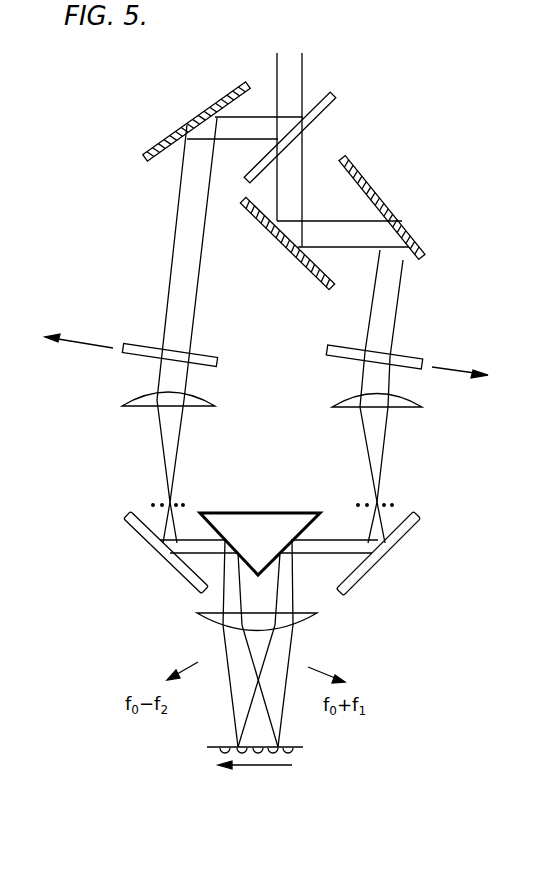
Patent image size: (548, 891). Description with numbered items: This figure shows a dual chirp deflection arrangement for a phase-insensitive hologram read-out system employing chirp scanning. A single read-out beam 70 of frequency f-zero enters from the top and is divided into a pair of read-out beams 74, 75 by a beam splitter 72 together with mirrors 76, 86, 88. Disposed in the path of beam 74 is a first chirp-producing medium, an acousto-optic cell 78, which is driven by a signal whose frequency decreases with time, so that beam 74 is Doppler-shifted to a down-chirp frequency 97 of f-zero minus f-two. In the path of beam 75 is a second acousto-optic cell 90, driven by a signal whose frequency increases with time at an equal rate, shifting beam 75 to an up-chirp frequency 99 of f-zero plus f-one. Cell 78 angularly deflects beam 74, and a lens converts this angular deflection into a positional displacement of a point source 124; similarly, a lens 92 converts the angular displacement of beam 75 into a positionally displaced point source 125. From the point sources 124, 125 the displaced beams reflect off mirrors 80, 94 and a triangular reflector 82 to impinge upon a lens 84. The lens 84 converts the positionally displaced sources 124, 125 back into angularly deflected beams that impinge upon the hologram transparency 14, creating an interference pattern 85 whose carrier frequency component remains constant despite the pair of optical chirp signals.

The read-out beam 70 is at (302, 70).
The beam splitter 72 is at (337, 93).
The read-out beam 74 is at (173, 238).
The read-out beam 75 is at (400, 303).
The mirror 76 is at (192, 118).
The acousto-optic cell 78 is at (203, 347).
The mirror 80 is at (143, 540).
The triangular reflector 82 is at (265, 513).
The lens 84 is at (208, 617).
The interference pattern 85 is at (262, 747).
The mirror 86 is at (290, 260).
The mirror 88 is at (380, 203).
The acousto-optic cell 90 is at (413, 355).
The lens 92 is at (400, 408).
The mirror 94 is at (403, 540).
The down-chirp beam 97 is at (87, 345).
The up-chirp beam 99 is at (453, 368).
The point source 124 is at (172, 502).
The point source 125 is at (382, 502).
The hologram transparency 14 is at (215, 752).